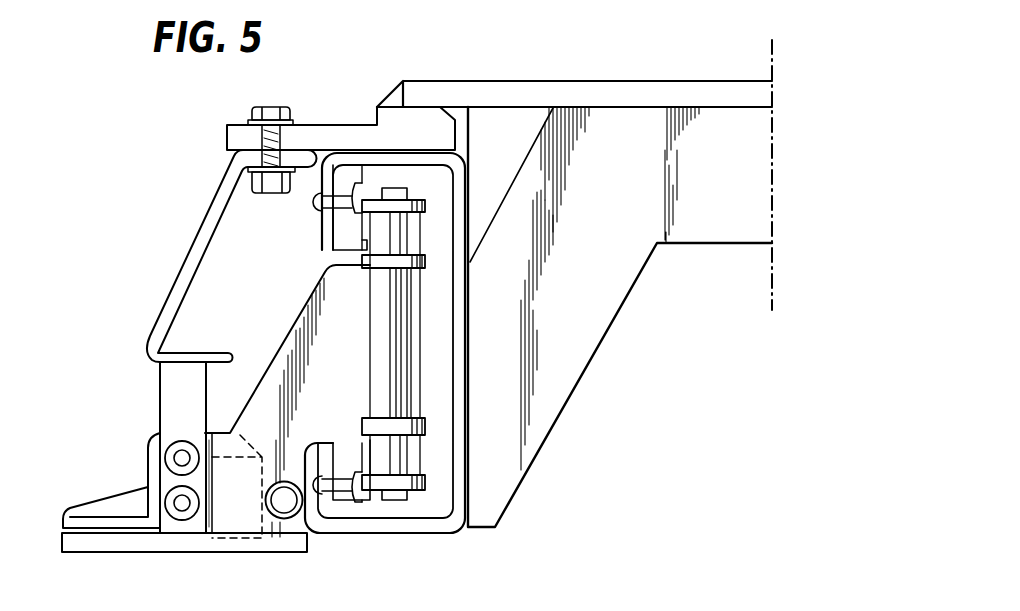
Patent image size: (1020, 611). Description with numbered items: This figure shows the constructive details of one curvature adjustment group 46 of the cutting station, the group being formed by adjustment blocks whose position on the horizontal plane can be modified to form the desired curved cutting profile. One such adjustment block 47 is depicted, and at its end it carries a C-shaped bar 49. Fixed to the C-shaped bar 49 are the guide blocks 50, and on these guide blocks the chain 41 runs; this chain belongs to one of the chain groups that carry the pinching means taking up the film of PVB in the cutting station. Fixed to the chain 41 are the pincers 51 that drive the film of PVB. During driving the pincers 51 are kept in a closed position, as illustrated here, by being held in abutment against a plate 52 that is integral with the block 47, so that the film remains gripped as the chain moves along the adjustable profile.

The chain 41 is at (403, 227).
The curvature adjustment group 46 is at (566, 78).
The adjustment block 47 is at (653, 140).
The C-shaped bar 49 is at (420, 153).
The guide block 50 is at (347, 240).
The pincer 51 is at (123, 503).
The plate 52 is at (197, 248).